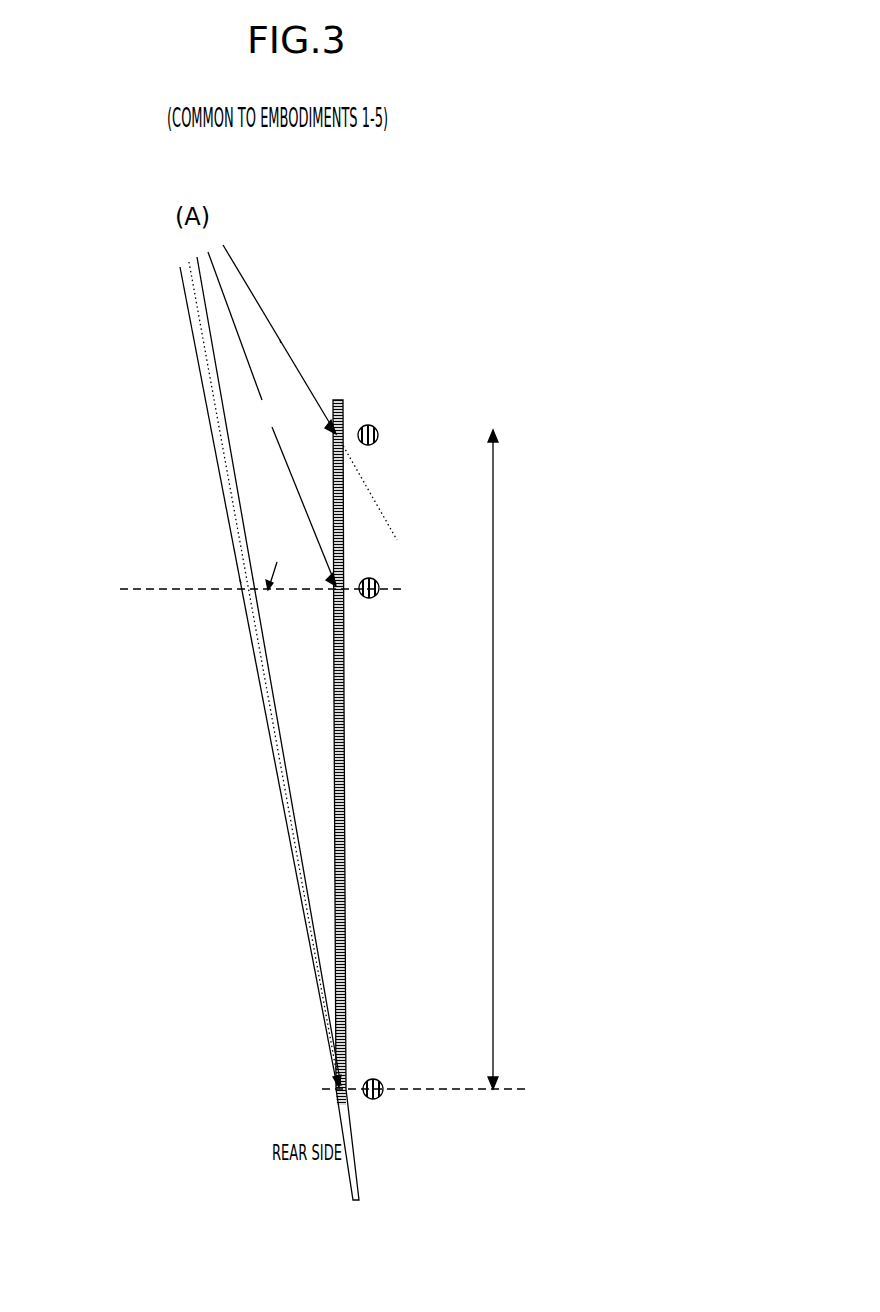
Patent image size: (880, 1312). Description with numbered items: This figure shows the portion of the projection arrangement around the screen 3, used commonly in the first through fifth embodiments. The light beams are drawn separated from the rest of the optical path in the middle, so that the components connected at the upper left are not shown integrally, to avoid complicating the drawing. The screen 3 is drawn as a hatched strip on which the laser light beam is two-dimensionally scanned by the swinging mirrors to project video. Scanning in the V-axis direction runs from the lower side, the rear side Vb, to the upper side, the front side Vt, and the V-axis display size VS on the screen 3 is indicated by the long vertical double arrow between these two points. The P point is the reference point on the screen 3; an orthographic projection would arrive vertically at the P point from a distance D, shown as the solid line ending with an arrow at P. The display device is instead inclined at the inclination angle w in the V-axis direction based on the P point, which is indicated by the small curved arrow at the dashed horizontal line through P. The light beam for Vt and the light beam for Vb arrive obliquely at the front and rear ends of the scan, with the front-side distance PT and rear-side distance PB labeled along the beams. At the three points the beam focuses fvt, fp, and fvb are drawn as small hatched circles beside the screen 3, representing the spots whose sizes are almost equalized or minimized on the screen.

The screen 3 is at (348, 861).
The upper side (front side) Vt is at (245, 284).
The lower side (rear side) Vb is at (194, 330).
The distance D is at (272, 419).
The P point P is at (262, 578).
The PT distance PT is at (330, 339).
The PB distance PB is at (238, 663).
The V-axis display size VS is at (491, 759).
The beam focus fvt is at (348, 437).
The beam focus fp is at (345, 585).
The beam focus fvb is at (344, 1084).
The inclination angle θω w is at (310, 532).